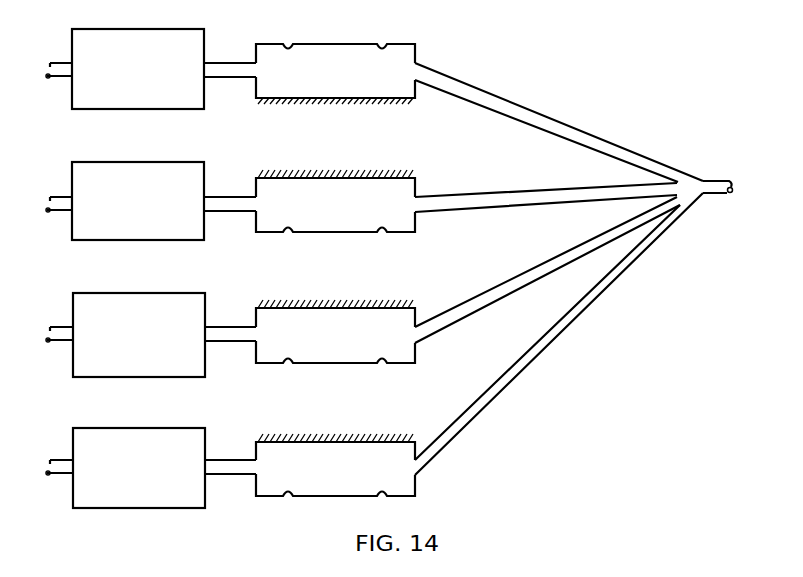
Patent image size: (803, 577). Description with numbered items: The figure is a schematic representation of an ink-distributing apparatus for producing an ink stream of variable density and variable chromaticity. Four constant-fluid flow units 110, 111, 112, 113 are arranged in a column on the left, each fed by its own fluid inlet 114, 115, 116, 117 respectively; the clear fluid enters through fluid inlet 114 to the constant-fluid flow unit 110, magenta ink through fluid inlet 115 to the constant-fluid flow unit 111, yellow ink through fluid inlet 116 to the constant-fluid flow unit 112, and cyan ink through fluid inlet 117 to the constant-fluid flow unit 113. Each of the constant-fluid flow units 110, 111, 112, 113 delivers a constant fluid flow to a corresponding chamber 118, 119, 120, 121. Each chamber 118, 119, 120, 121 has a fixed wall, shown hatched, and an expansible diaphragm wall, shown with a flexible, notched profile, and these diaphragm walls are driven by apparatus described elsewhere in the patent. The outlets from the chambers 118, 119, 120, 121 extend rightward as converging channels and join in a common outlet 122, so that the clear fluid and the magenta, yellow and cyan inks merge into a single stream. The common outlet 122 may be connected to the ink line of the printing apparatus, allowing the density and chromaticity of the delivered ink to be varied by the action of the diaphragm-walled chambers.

The constant-fluid flow unit 110 is at (140, 28).
The constant-fluid flow unit 111 is at (147, 161).
The constant-fluid flow unit 112 is at (145, 292).
The constant-fluid flow unit 113 is at (143, 427).
The fluid inlet 114 is at (60, 66).
The fluid inlet 115 is at (62, 199).
The fluid inlet 116 is at (63, 330).
The fluid inlet 117 is at (63, 463).
The chamber 118 is at (405, 52).
The chamber 119 is at (400, 190).
The chamber 120 is at (415, 346).
The chamber 121 is at (405, 480).
The common outlet 122 is at (721, 182).